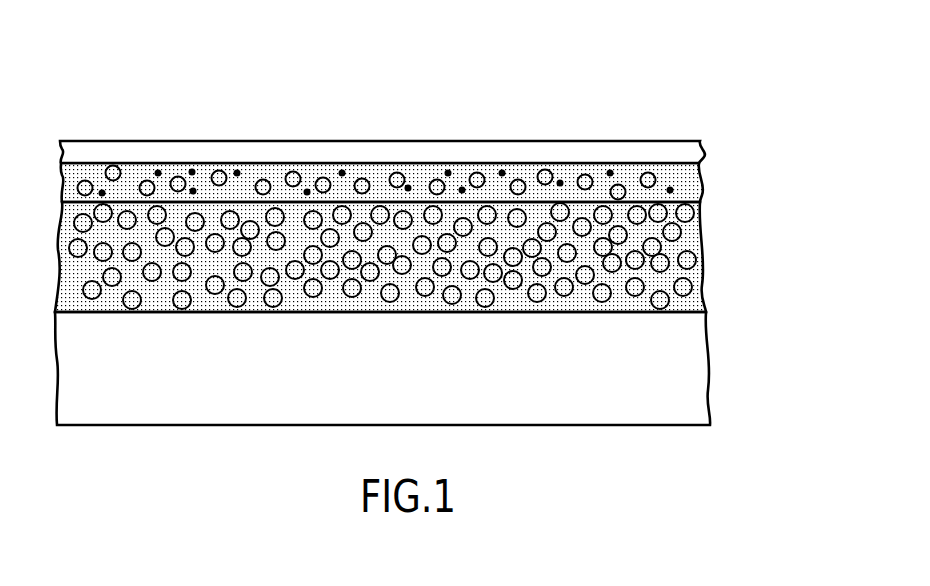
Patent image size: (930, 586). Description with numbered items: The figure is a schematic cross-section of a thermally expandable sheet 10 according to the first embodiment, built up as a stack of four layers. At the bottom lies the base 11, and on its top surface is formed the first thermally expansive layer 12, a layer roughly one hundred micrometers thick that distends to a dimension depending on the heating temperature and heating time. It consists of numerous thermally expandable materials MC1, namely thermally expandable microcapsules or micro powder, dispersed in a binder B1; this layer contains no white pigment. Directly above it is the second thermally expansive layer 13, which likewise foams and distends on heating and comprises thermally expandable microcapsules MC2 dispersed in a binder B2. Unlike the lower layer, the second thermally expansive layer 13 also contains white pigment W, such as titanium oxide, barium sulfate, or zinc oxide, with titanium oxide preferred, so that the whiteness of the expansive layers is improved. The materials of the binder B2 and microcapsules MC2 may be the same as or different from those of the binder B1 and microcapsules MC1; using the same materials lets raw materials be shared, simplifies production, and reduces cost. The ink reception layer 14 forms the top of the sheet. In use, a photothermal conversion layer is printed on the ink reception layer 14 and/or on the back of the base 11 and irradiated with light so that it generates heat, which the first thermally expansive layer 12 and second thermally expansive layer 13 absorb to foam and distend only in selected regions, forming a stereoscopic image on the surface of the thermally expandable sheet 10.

The thermally expandable sheet 10 is at (426, 220).
The base 11 is at (688, 378).
The first thermally expansive layer 12 is at (426, 201).
The second thermally expansive layer 13 is at (420, 135).
The ink reception layer 14 is at (677, 152).
The white pigment W is at (157, 170).
The thermally expandable material MC1 is at (231, 213).
The binder B1 is at (293, 213).
The thermally expandable microcapsules MC2 is at (362, 185).
The binder B2 is at (457, 173).